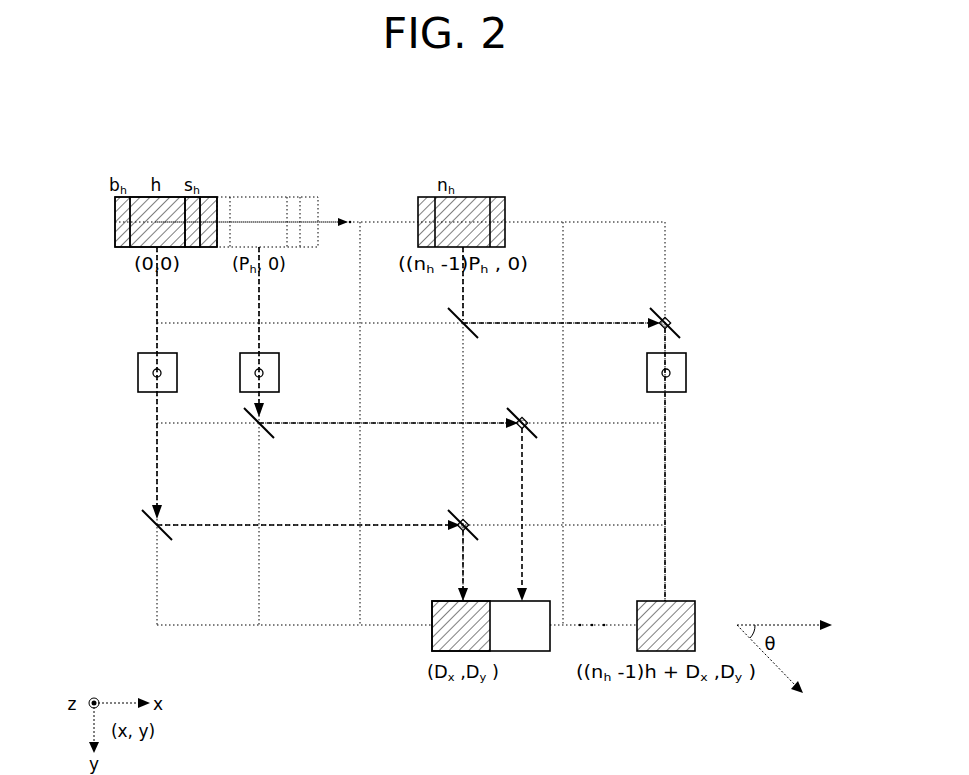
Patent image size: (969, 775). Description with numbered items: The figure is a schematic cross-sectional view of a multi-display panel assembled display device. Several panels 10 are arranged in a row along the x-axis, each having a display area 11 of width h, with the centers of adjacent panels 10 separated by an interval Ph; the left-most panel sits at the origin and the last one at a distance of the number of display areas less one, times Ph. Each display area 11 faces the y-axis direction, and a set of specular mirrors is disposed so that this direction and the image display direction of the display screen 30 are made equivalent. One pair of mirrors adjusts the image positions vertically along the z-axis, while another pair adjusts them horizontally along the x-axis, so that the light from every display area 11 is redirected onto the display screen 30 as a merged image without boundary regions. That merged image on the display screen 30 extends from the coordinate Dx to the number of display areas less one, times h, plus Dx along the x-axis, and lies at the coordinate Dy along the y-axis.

The panel 10 is at (115, 222).
The display area 11 is at (141, 197).
The display screen 30 is at (702, 600).